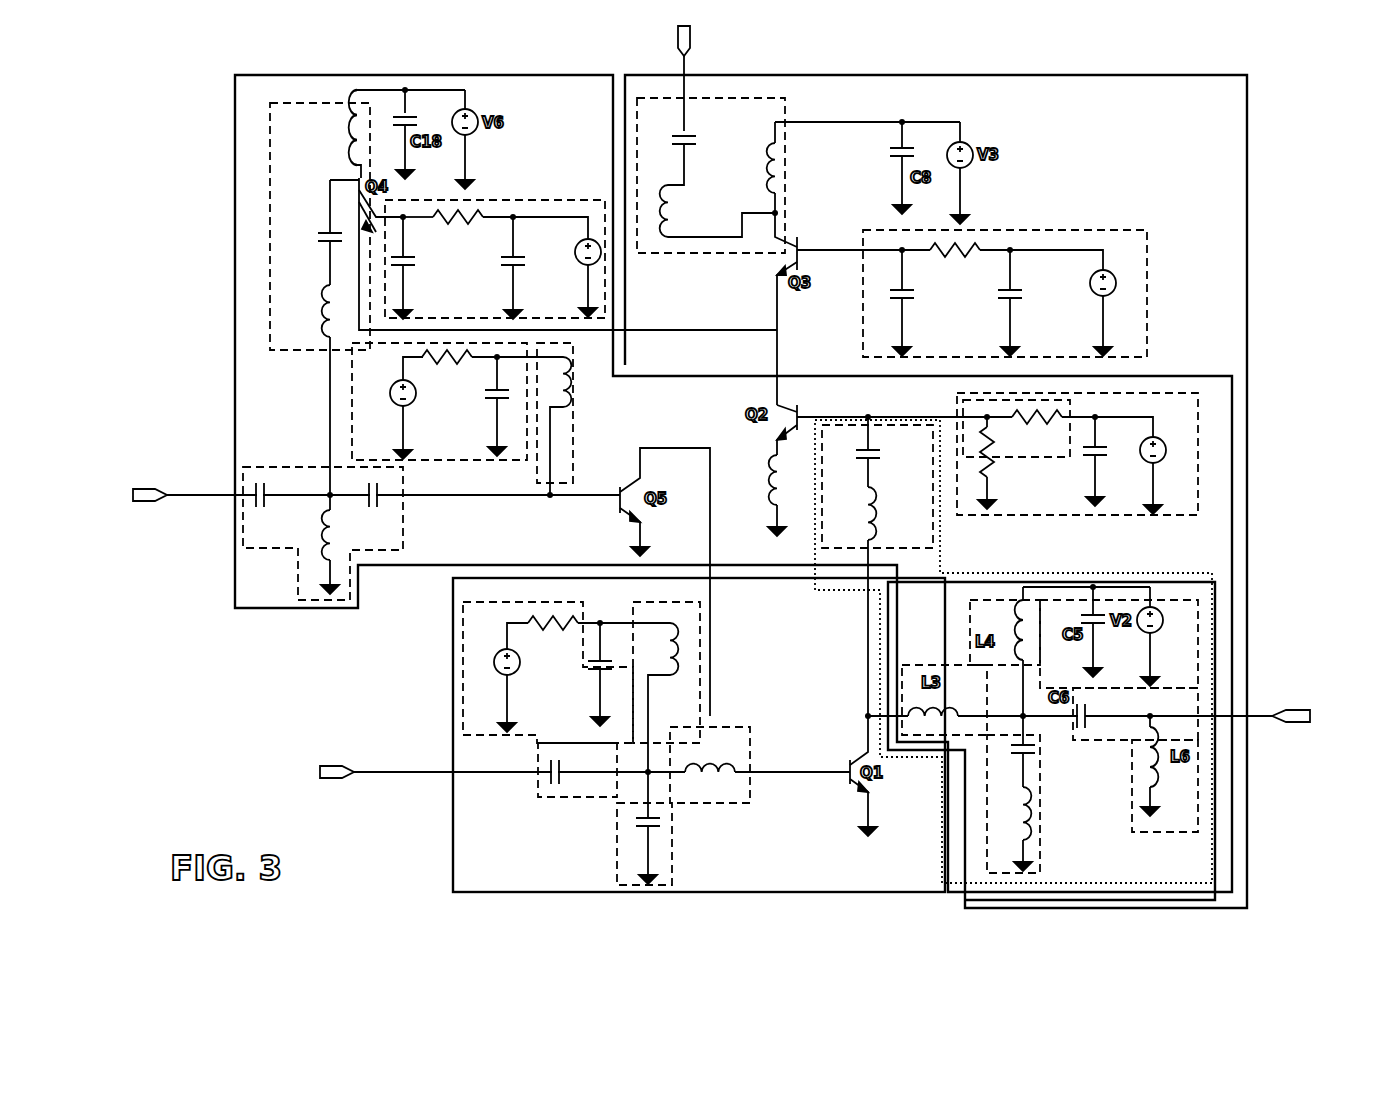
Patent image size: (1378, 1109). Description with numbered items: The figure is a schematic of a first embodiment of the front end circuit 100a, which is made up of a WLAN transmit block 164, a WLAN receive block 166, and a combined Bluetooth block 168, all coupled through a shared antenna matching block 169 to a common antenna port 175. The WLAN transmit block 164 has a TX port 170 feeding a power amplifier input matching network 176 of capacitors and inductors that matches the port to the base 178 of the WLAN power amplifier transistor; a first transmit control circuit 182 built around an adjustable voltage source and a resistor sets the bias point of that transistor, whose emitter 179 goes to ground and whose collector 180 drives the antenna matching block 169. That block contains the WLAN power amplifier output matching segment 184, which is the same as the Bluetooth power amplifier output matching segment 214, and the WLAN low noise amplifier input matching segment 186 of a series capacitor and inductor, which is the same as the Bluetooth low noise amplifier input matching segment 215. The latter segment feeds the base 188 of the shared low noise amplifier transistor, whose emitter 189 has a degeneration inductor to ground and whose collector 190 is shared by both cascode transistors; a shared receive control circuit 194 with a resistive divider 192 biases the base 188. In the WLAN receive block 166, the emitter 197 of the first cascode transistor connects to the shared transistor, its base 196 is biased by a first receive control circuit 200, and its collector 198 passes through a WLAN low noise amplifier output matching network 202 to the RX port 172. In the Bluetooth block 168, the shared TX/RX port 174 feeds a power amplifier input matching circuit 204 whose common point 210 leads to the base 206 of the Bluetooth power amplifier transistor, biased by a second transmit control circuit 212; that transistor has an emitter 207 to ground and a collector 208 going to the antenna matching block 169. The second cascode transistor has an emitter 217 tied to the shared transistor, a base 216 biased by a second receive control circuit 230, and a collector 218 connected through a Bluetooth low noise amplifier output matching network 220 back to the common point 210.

The front end circuit 100a is at (362, 658).
The WLAN transmit block 164 is at (757, 892).
The WLAN receive block 166 is at (1140, 75).
The combined Bluetooth block 168 is at (405, 570).
The antenna matching block 169 is at (1190, 573).
The TX port 170 is at (342, 780).
The RX port 172 is at (676, 40).
The shared TX/RX port 174 is at (158, 503).
The antenna port 175 is at (1300, 724).
The power amplifier input matching network 176 is at (672, 835).
The base 178 is at (828, 775).
The transistor Q1 emitter 179 is at (868, 800).
The collector 180 is at (866, 737).
The first transmit control circuit 182 is at (463, 693).
The WLAN power amplifier output matching segment 184 is at (1074, 795).
The Bluetooth power amplifier output matching segment 214 is at (1062, 858).
The WLAN low noise amplifier input matching segment 186 is at (924, 565).
The Bluetooth low noise amplifier input matching segment 215 is at (935, 549).
The base 188 is at (812, 415).
The emitter 189 is at (777, 440).
The transistor Q2 collector 190 is at (777, 388).
The resistive divider 192 is at (1040, 457).
The shared receive control circuit 194 is at (1153, 515).
The base 196 is at (813, 250).
The emitter 197 is at (777, 300).
The collector 198 is at (785, 213).
The first receive control circuit 200 is at (1148, 252).
The WLAN low noise amplifier output matching network 202 is at (790, 183).
The power amplifier input matching circuit 204 is at (266, 550).
The base 206 is at (600, 493).
The transistor Q5 emitter 207 is at (630, 519).
The collector 208 is at (638, 456).
The common point 210 is at (329, 493).
The second transmit control circuit 212 is at (445, 462).
The base 216 is at (376, 232).
The emitter 217 is at (376, 216).
The collector 218 is at (358, 180).
The Bluetooth low noise amplifier output matching network 220 is at (270, 163).
The second receive control circuit 230 is at (478, 318).